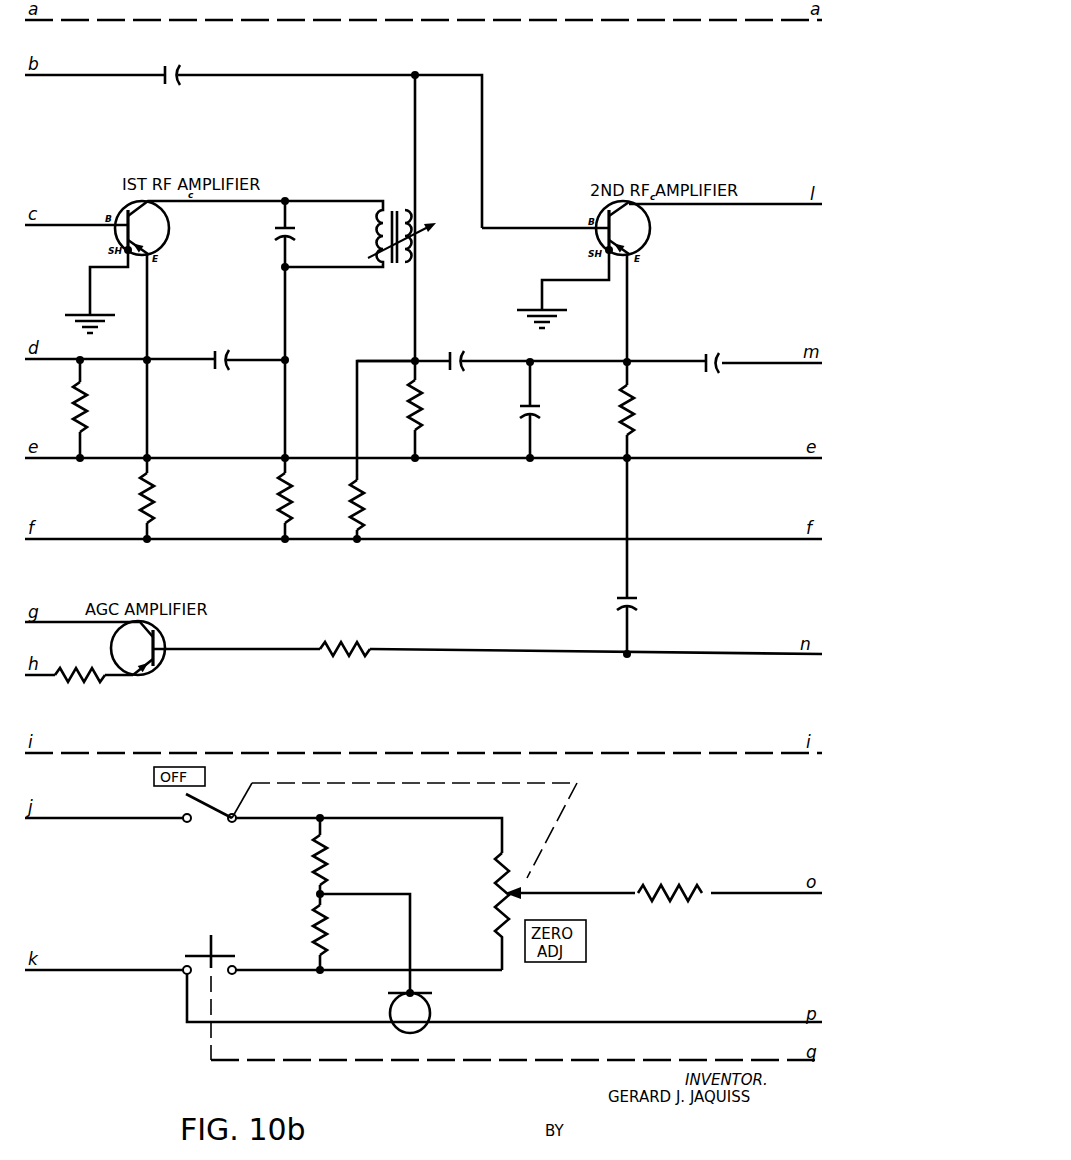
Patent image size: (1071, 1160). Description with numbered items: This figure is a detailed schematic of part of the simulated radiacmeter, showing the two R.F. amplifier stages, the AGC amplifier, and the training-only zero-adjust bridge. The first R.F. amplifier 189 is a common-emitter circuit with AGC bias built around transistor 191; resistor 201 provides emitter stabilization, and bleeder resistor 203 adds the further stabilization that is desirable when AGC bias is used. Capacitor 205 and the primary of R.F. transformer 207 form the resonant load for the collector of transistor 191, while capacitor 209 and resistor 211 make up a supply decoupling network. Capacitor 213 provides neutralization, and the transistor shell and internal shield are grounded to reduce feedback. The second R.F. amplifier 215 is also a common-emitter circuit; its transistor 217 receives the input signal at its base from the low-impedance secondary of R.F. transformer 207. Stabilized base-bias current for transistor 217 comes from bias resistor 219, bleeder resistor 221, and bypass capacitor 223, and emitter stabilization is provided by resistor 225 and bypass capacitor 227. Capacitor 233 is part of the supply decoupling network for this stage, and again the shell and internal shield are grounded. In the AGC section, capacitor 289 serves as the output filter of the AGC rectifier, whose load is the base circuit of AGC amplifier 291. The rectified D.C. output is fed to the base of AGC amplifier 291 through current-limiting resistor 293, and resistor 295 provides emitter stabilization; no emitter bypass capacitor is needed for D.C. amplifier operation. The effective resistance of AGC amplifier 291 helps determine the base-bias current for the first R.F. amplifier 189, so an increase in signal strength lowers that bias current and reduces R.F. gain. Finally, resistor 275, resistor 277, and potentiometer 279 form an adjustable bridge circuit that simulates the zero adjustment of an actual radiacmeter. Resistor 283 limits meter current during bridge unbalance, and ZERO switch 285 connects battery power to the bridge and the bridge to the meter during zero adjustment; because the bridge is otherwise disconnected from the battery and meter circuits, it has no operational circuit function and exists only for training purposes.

The first R.F. amplifier 189 is at (114, 213).
The transistor 191 is at (168, 227).
The resistor 201 is at (87, 404).
The bleeder resistor 203 is at (153, 498).
The capacitor 205 is at (290, 236).
The R.F. transformer 207 is at (387, 210).
The capacitor 209 is at (228, 358).
The resistor 211 is at (291, 497).
The capacitor 213 is at (166, 74).
The second R.F. amplifier 215 is at (592, 214).
The transistor 217 is at (649, 237).
The bias resistor 219 is at (364, 498).
The bleeder resistor 221 is at (422, 407).
The bypass capacitor 223 is at (450, 359).
The resistor 225 is at (636, 407).
The bypass capacitor 227 is at (540, 405).
The capacitor 233 is at (706, 358).
The resistor 275 is at (327, 854).
The resistor 277 is at (327, 930).
The potentiometer 279 is at (526, 881).
The resistor 283 is at (668, 883).
The ZERO switch 285 is at (227, 954).
The capacitor 289 is at (632, 606).
The AGC amplifier 291 is at (164, 659).
The current-limiting resistor 293 is at (339, 663).
The resistor 295 is at (80, 695).